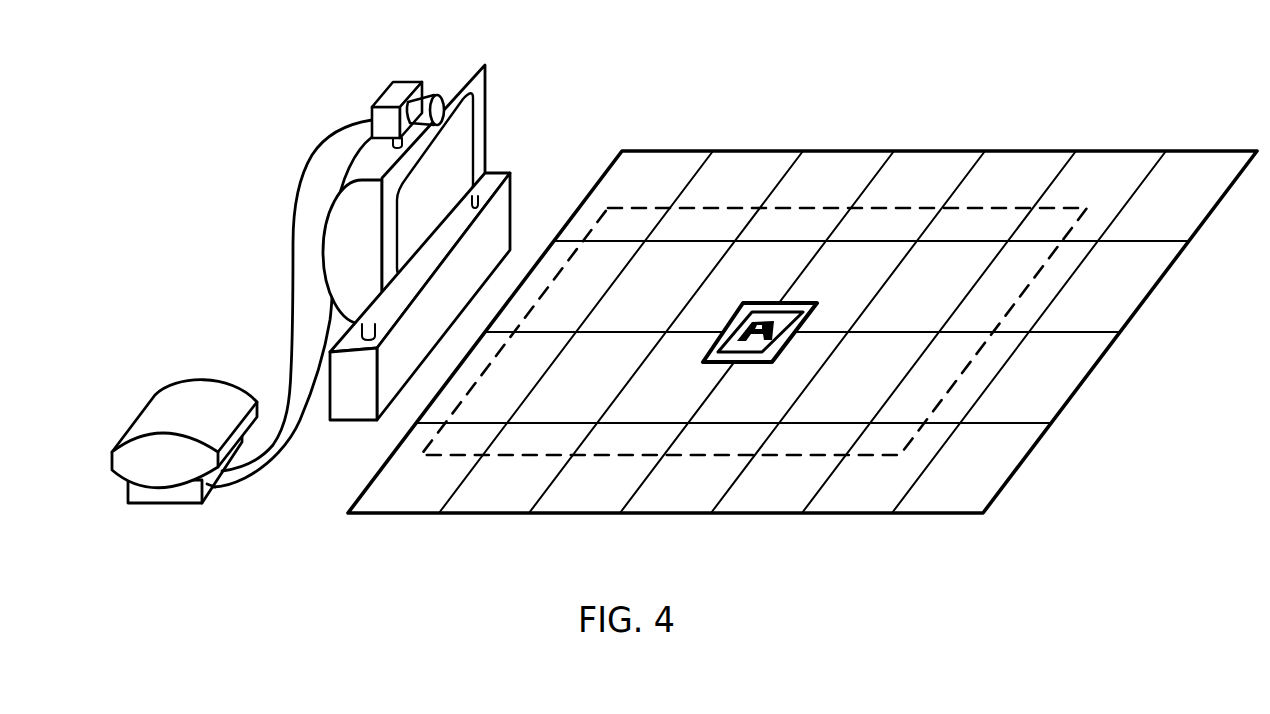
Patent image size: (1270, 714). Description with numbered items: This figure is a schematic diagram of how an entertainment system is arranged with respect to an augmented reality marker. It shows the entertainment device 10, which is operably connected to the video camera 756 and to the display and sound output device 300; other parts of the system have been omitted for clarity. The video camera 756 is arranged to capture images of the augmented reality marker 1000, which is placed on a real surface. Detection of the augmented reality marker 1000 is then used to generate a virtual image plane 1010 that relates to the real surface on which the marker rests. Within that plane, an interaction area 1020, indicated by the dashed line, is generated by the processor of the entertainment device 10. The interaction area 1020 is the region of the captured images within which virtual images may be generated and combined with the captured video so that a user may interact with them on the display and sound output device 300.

The entertainment device 10 is at (188, 406).
The display and sound output device 300 is at (477, 90).
The video camera 756 is at (393, 97).
The augmented reality marker 1000 is at (802, 304).
The virtual image plane 1010 is at (1015, 167).
The interaction area 1020 is at (737, 183).